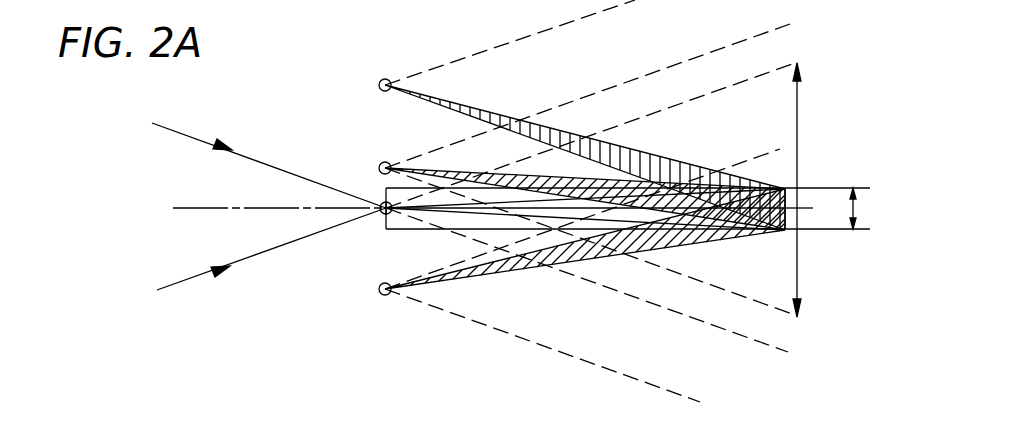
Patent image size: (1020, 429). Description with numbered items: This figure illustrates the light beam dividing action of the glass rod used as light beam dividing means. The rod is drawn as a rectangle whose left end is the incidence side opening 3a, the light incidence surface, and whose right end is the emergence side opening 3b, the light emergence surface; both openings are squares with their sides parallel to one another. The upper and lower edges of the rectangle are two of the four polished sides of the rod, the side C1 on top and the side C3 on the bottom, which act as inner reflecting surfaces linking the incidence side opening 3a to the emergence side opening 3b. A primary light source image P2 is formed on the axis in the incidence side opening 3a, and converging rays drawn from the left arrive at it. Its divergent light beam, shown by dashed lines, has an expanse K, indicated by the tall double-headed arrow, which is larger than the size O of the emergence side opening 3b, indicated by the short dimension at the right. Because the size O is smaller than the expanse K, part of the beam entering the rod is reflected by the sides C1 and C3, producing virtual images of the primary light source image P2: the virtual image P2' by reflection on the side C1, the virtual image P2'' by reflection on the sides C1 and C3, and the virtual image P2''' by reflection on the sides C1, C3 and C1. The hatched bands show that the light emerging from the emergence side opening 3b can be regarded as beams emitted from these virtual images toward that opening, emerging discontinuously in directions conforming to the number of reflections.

The incidence side opening 3a is at (385, 225).
The emergence side opening 3b is at (788, 190).
The expanse of the divergent light beam K is at (799, 106).
The size of the emergence side opening O is at (831, 208).
The primary light source image P2 is at (551, 207).
The virtual image P2' is at (565, 169).
The virtual image P2'' is at (562, 275).
The virtual image P2''' is at (569, 115).
The side of the glass rod C1 is at (417, 186).
The side of the glass rod C3 is at (412, 230).